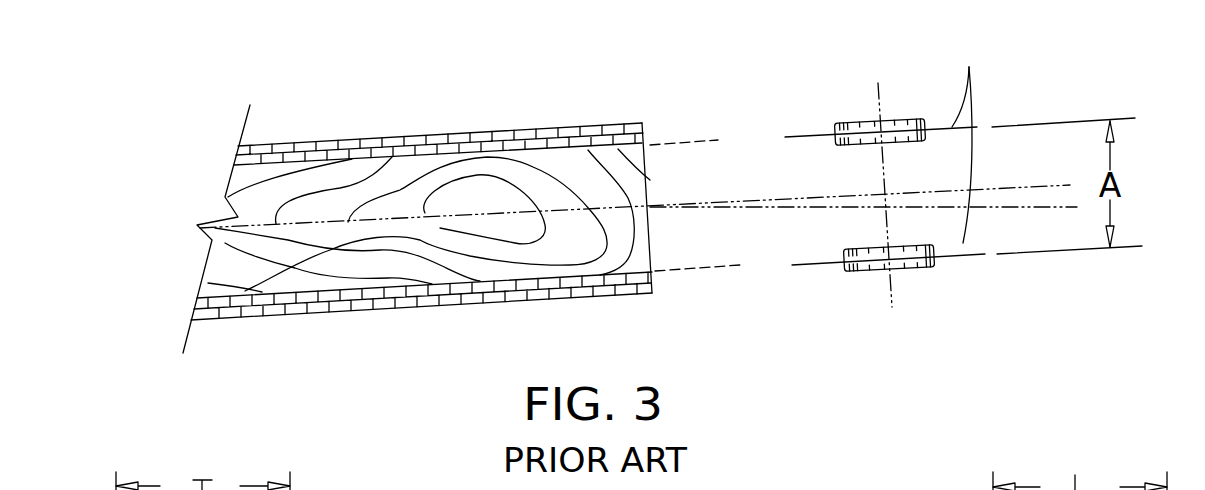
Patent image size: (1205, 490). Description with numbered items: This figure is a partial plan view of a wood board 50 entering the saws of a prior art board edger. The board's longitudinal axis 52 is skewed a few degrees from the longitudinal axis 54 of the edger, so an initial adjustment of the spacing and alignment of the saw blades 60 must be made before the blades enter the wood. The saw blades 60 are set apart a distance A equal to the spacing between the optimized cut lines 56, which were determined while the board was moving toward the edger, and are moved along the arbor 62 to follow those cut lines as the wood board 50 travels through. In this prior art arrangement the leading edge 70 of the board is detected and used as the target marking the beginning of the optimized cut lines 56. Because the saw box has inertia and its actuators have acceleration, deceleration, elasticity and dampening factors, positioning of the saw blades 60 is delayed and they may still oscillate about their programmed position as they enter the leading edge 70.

The wood board 50 is at (503, 128).
The longitudinal axis of the wood board 52 is at (1018, 187).
The longitudinal axis of the optimized board edger 54 is at (1038, 207).
The optimized cut lines 56 is at (728, 267).
The saw blades 60 is at (966, 134).
The arbor 62 is at (892, 293).
The leading edge 70 is at (648, 185).